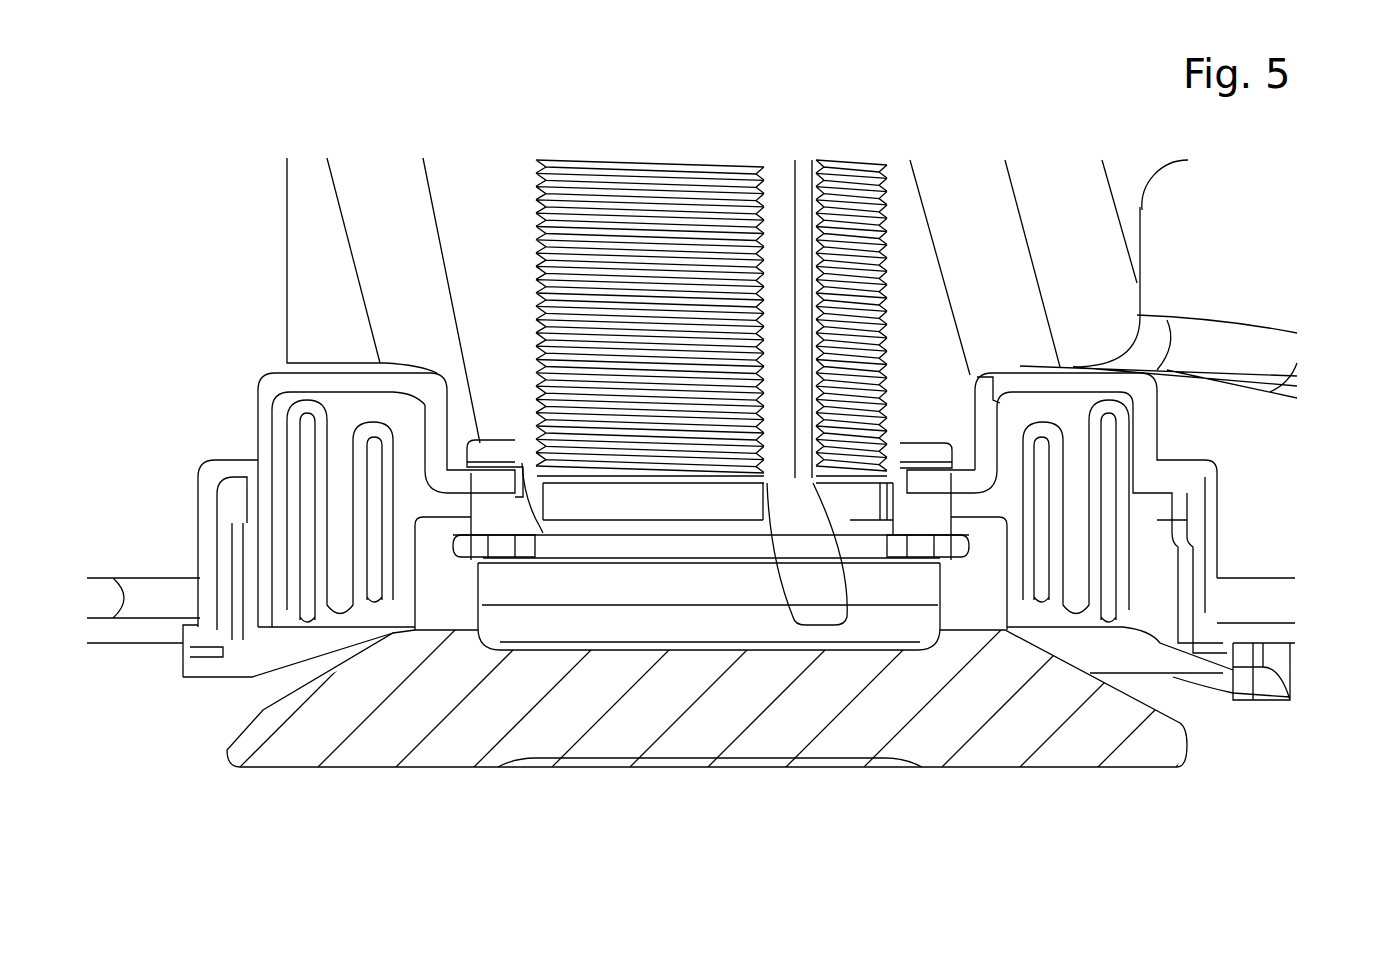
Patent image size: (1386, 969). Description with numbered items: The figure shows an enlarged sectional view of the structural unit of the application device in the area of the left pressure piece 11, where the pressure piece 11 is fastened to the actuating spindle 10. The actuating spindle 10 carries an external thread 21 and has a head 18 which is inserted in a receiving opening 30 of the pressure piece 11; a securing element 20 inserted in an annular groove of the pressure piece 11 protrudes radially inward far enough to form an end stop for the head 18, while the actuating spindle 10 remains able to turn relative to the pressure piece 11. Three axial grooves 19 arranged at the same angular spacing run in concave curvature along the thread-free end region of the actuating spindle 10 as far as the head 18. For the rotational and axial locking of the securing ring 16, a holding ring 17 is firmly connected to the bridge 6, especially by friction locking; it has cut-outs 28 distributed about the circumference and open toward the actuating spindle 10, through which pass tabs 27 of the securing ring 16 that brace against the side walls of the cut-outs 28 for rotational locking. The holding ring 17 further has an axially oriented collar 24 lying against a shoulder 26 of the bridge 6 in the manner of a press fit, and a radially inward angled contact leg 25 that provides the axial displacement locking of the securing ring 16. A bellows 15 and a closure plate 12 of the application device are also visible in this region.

The bridge 6 is at (307, 207).
The actuating spindle 10 is at (893, 213).
The pressure piece 11 is at (942, 732).
The closure plate 12 is at (1258, 632).
The bellows 15 is at (1087, 603).
The securing ring 16 is at (918, 468).
The holding ring 17 is at (435, 495).
The head 18 is at (608, 582).
The axial groove 19 is at (802, 583).
The securing element 20 is at (952, 547).
The external thread 21 is at (612, 205).
The collar 24 is at (423, 412).
The contact leg 25 is at (479, 445).
The shoulder 26 is at (440, 410).
The tab 27 is at (536, 462).
The cut-out 28 is at (522, 470).
The receiving opening 30 is at (702, 655).